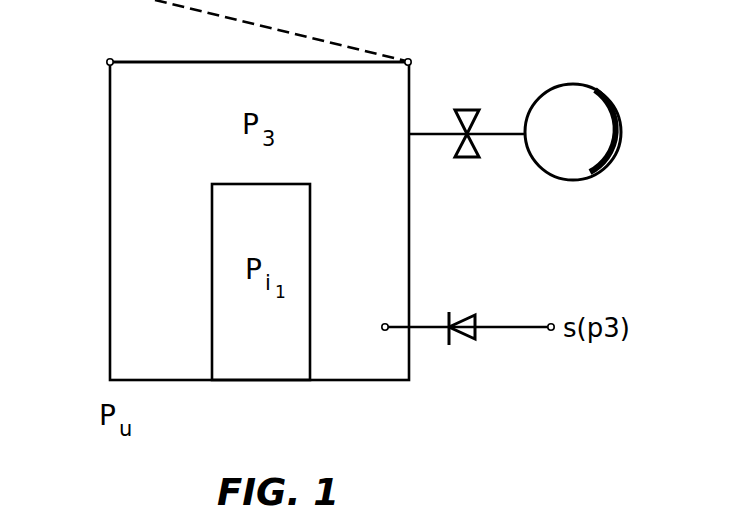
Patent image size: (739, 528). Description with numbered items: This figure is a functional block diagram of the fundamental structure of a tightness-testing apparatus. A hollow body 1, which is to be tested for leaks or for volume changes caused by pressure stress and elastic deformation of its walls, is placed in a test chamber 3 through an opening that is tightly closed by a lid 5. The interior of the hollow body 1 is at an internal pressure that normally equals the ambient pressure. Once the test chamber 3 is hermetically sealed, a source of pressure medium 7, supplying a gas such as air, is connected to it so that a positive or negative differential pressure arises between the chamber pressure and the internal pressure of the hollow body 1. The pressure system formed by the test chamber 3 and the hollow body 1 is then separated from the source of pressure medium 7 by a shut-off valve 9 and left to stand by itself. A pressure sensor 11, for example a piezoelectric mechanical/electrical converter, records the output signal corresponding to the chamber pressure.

The hollow body 1 is at (212, 248).
The test chamber 3 is at (108, 194).
The lid 5 is at (148, 62).
The source of pressure medium 7 is at (615, 107).
The shut-off valve 9 is at (467, 110).
The pressure sensor 11 is at (457, 314).